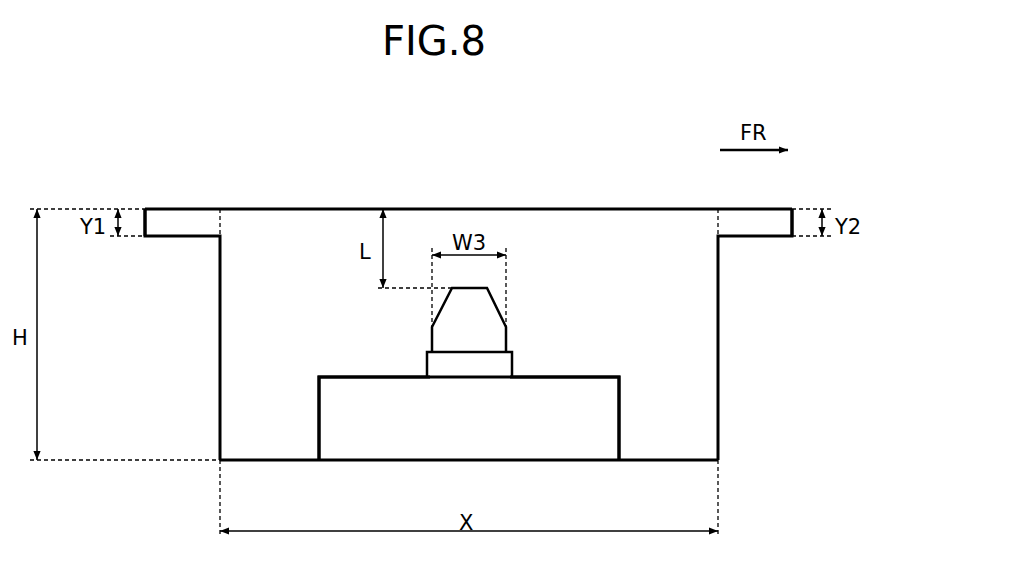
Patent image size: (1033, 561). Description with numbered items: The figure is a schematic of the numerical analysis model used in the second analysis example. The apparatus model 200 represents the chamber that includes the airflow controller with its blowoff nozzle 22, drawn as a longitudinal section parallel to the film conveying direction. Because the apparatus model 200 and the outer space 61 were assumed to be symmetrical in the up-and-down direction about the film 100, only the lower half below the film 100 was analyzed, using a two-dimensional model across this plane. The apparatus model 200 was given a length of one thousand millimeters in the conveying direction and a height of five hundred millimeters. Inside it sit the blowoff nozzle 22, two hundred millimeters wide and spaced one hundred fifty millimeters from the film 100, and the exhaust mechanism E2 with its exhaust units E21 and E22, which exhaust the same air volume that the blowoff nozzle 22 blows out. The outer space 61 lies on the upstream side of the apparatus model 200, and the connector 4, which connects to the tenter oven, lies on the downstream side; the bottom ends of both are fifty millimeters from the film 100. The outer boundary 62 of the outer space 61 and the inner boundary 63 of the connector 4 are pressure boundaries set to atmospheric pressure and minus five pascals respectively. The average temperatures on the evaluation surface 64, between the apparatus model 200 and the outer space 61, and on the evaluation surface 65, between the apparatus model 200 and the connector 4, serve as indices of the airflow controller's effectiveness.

The apparatus model 200 is at (489, 127).
The film 100 is at (467, 209).
The outer space 61 is at (185, 237).
The outer boundary 62 is at (145, 222).
The inner boundary 63 is at (793, 222).
The evaluation surface 64 is at (221, 234).
The evaluation surface 65 is at (716, 234).
The connector 4 is at (757, 237).
The blowoff nozzle 22 is at (448, 338).
The exhaust mechanism E2 is at (425, 461).
The exhaust unit E21 is at (355, 378).
The exhaust unit E22 is at (585, 378).